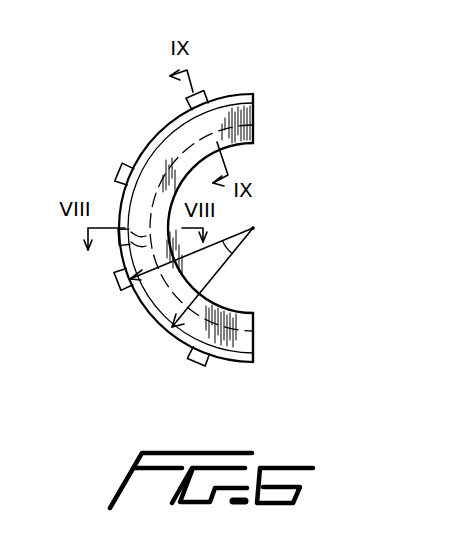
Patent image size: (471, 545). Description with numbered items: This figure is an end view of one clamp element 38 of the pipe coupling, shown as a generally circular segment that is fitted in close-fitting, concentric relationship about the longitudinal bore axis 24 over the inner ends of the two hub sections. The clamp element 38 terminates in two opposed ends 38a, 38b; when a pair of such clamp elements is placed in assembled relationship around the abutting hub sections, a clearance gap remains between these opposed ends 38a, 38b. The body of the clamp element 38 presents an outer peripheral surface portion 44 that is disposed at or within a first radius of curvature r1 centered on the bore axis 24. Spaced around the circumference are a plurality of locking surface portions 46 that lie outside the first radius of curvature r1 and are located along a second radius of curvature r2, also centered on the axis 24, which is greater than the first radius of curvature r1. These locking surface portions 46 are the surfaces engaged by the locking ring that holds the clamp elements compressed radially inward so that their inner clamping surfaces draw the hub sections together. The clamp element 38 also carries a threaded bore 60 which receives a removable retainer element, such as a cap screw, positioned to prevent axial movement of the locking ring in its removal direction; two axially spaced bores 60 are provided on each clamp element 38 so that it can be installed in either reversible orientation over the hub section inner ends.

The longitudinal bore axis 24 is at (253, 228).
The clamp element 38 is at (162, 155).
The opposed end of clamp element 38a is at (257, 103).
The opposed end of clamp element 38b is at (254, 319).
The outer peripheral surface portion 44 is at (163, 130).
The locking surface portions 46 is at (207, 90).
The threaded bore 60 is at (122, 243).
The first radius of curvature r1 is at (213, 279).
The second radius of curvature r2 is at (237, 250).